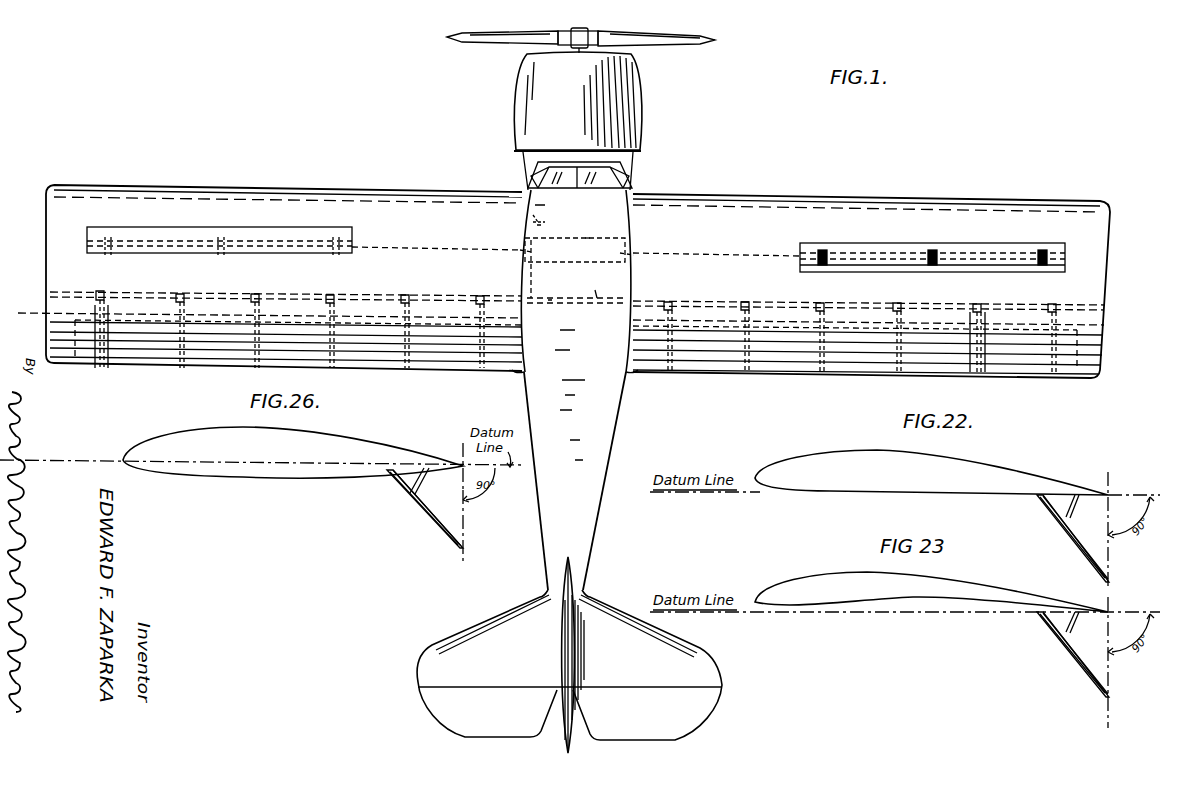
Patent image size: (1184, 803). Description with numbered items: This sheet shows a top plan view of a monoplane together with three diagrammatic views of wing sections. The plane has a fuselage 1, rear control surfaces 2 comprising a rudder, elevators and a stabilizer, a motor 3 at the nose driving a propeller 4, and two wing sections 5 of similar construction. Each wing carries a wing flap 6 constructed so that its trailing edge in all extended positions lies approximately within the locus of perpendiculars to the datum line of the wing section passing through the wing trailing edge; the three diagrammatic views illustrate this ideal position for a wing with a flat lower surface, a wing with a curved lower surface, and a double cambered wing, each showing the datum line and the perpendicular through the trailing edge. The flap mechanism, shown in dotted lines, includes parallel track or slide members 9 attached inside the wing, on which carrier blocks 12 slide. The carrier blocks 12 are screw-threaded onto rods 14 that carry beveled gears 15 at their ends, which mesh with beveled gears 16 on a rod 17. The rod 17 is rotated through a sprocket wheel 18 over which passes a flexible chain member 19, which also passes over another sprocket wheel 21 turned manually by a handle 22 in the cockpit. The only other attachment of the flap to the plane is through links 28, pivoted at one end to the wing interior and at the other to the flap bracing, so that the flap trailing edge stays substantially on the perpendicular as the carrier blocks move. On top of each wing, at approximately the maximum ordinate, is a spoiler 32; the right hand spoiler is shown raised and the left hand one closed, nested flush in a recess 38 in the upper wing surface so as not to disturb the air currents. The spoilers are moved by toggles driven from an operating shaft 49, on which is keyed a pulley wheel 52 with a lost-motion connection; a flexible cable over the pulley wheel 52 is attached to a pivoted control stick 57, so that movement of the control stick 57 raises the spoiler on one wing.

In FIG. 1, the fuselage 1 is at (621, 414).
In FIG. 1, the rear control surfaces 2 is at (460, 630).
In FIG. 1, the motor 3 is at (642, 112).
In FIG. 1, the propeller 4 is at (650, 23).
In FIG. 1, the wing sections 5 is at (420, 188).
In FIG. 26, the wing sections 5 is at (198, 427).
In FIG. 22, the wing sections 5 is at (837, 452).
In FIG. 23, the wing sections 5 is at (957, 582).
In FIG. 1, the wing flap 6 is at (75, 313).
In FIG. 26, the wing flap 6 is at (423, 518).
In FIG. 22, the wing flap 6 is at (1072, 545).
In FIG. 23, the wing flap 6 is at (1072, 652).
In FIG. 1, the track or slide members 9 is at (100, 368).
In FIG. 1, the carrier blocks 12 is at (108, 310).
In FIG. 1, the rods 14 is at (97, 305).
In FIG. 1, the beveled gears 15 is at (97, 290).
In FIG. 1, the beveled gears 16 is at (103, 290).
In FIG. 1, the rod 17 is at (598, 286).
In FIG. 1, the sprocket wheel 18 is at (533, 297).
In FIG. 1, the flexible chain member 19 is at (533, 275).
In FIG. 1, the sprocket wheel 21 is at (537, 222).
In FIG. 1, the handle 22 is at (545, 222).
In FIG. 22, the links 28 is at (1072, 514).
In FIG. 23, the links 28 is at (1072, 630).
In FIG. 1, the spoilers 32 is at (258, 229).
In FIG. 1, the recess 38 is at (885, 262).
In FIG. 1, the operating shaft 49 is at (462, 246).
In FIG. 1, the pulley wheel 52 is at (520, 258).
In FIG. 1, the control stick 57 is at (582, 236).